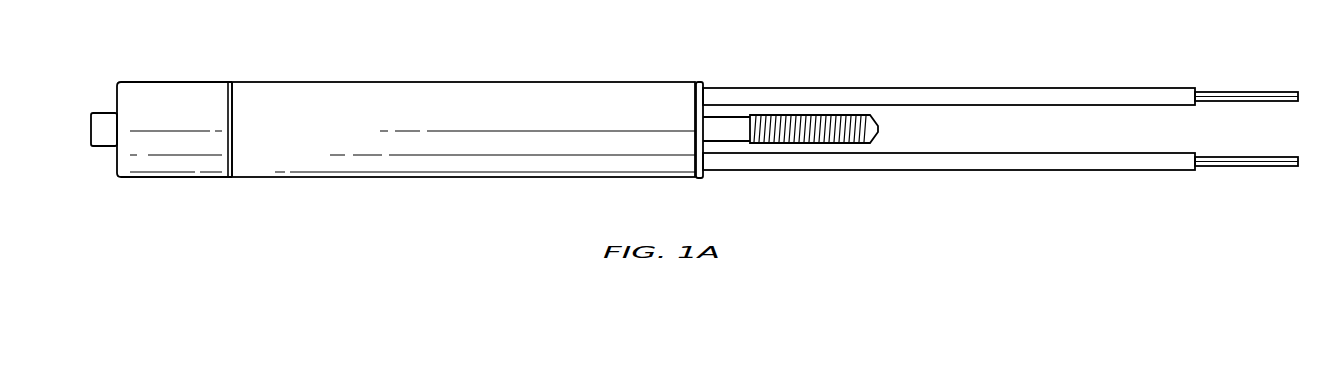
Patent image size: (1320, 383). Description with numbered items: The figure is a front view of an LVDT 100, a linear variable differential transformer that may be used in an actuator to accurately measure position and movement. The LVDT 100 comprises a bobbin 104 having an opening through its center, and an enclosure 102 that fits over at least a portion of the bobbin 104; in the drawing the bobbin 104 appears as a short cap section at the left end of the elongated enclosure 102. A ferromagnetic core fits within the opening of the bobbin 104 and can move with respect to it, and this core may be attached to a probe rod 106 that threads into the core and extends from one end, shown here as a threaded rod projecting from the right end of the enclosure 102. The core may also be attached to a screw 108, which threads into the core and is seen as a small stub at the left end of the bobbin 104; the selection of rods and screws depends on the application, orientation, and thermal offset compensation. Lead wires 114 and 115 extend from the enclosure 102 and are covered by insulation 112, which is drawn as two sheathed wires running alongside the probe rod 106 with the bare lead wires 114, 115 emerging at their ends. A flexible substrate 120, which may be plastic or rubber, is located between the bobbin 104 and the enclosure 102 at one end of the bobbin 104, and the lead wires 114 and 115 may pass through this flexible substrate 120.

The LVDT 100 is at (309, 25).
The enclosure 102 is at (415, 82).
The bobbin 104 is at (193, 82).
The probe rod 106 is at (878, 129).
The screw 108 is at (91, 127).
The insulation 112 is at (945, 88).
The lead wire 114 is at (1218, 92).
The lead wire 115 is at (1218, 167).
The flexible substrate 120 is at (700, 178).